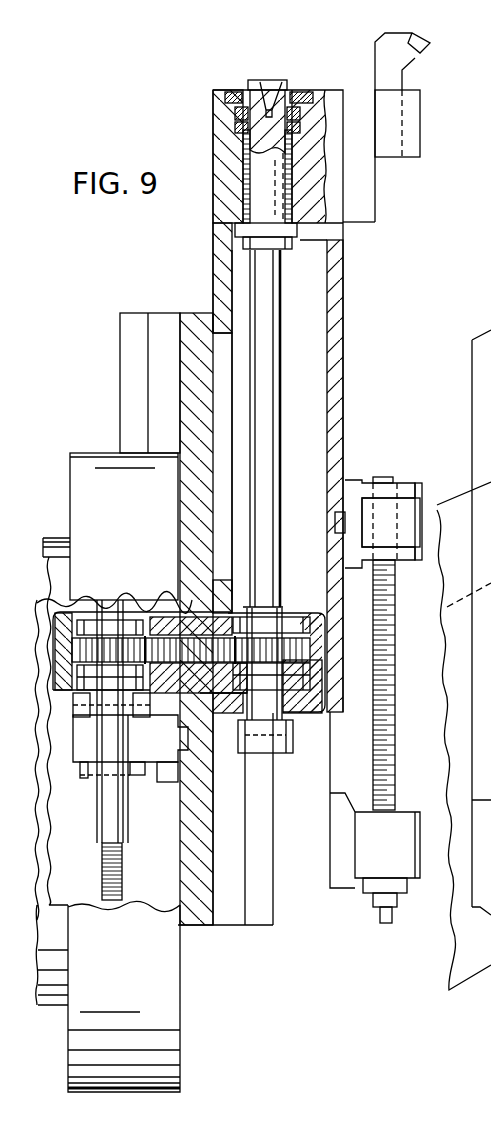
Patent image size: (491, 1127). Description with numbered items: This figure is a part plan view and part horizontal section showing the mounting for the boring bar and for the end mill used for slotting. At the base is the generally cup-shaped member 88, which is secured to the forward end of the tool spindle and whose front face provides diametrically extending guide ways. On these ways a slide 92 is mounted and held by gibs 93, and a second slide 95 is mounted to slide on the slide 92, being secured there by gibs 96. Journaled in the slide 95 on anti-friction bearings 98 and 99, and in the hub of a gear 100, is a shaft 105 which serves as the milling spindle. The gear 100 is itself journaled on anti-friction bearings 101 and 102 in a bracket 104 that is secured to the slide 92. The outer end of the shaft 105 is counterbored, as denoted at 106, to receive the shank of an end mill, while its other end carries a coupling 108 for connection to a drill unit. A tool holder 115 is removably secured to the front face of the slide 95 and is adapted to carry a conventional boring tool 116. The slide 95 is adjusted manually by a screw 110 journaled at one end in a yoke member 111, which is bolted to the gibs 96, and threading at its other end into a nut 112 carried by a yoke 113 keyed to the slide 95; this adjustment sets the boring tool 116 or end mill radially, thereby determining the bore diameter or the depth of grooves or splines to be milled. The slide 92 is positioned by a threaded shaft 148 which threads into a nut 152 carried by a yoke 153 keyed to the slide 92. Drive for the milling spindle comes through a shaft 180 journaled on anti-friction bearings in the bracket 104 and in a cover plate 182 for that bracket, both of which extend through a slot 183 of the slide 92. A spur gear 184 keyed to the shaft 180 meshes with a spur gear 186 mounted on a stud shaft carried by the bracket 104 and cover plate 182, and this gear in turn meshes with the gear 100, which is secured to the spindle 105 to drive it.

The cup-shaped member 88 is at (70, 470).
The slide 92 is at (195, 312).
The gibs 93 is at (122, 310).
The slide 95 is at (344, 333).
The gibs 96 is at (262, 926).
The anti-friction bearings 98 is at (234, 127).
The anti-friction bearings 99 is at (292, 243).
The gear 100 is at (306, 652).
The anti-friction bearings 101 is at (298, 623).
The anti-friction bearings 102 is at (292, 686).
The bracket 104 is at (236, 592).
The shaft 105 is at (282, 473).
The counterbore 106 is at (280, 88).
The coupling 108 is at (293, 737).
The screw 110 is at (396, 637).
The yoke member 111 is at (410, 816).
The nut 112 is at (406, 479).
The yoke 113 is at (420, 500).
The tool holder 115 is at (420, 142).
The boring tool 116 is at (419, 56).
The shaft 148 is at (123, 877).
The nut 152 is at (90, 780).
The yoke 153 is at (166, 783).
The shaft 180 is at (124, 818).
The cover plate 182 is at (130, 745).
The slot 183 is at (195, 603).
The spur gear 184 is at (83, 690).
The spur gear 186 is at (172, 624).